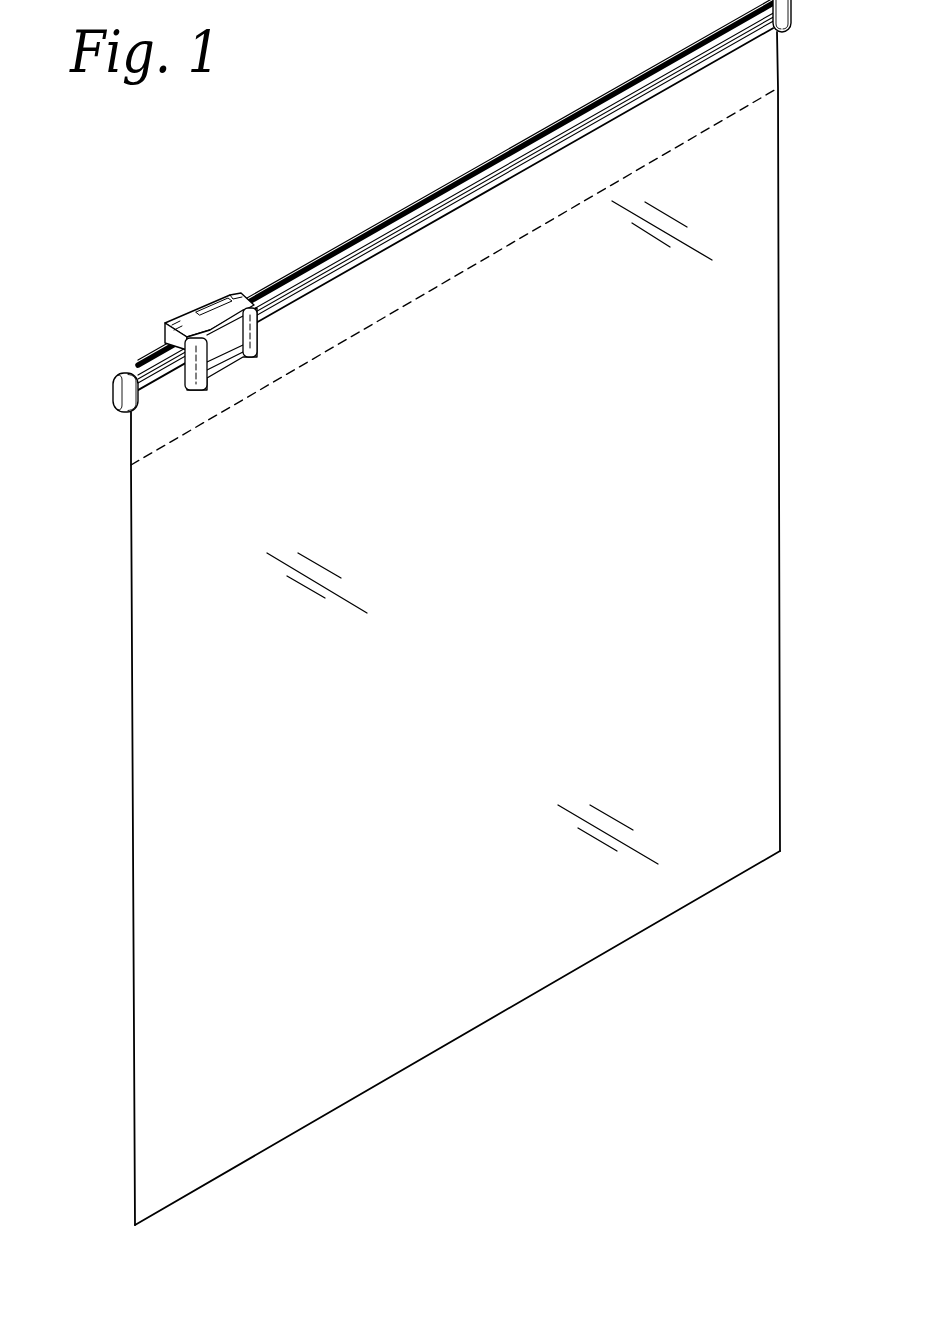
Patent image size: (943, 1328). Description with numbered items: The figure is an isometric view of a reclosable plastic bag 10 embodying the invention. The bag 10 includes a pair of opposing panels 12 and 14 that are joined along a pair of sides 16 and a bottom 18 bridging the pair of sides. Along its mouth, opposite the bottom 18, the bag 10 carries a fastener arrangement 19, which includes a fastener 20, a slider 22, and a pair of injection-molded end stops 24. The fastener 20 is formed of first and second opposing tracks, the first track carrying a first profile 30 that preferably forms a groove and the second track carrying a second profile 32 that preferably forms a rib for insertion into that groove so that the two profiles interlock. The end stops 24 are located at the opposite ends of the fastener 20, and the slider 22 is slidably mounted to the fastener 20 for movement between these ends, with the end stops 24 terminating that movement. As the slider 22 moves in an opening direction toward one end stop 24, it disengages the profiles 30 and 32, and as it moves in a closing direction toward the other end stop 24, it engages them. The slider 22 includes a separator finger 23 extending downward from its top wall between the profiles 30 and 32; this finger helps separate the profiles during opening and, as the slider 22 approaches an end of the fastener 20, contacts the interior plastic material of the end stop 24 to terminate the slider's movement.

The reclosable plastic bag 10 is at (446, 612).
The panel 12 is at (446, 628).
The panel 14 is at (160, 531).
The sides 16 is at (131, 593).
The bottom 18 is at (482, 1026).
The fastener arrangement 19 is at (455, 195).
The fastener 20 is at (428, 212).
The slider 22 is at (211, 286).
The separator finger 23 is at (206, 320).
The injection-molded end stops 24 is at (120, 405).
The first profile 30 is at (617, 103).
The second profile 32 is at (530, 139).